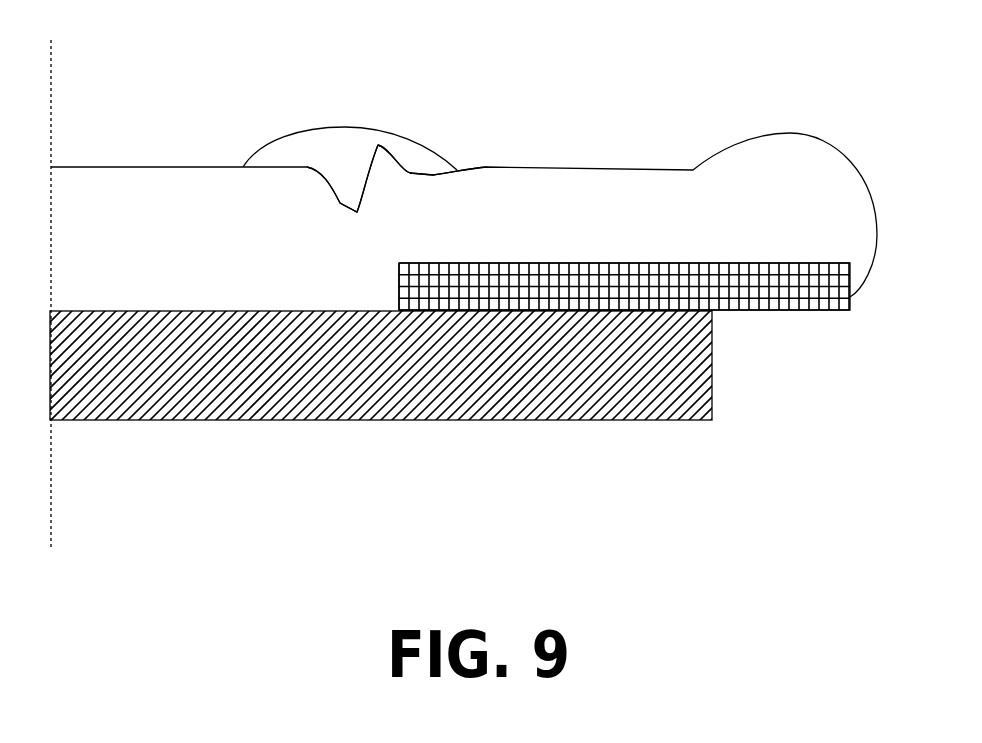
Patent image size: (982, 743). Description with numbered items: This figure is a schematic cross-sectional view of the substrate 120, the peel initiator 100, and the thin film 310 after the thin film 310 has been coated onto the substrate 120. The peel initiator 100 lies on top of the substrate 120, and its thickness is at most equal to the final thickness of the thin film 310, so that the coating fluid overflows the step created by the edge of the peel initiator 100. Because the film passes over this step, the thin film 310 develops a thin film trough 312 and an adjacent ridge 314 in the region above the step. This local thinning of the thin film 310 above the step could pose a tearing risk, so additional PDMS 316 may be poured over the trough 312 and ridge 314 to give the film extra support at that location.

The peel initiator 100 is at (780, 312).
The substrate 120 is at (468, 422).
The thin film 310 is at (483, 170).
The thin film trough 312 is at (358, 212).
The ridge 314 is at (378, 145).
The additional PDMS 316 is at (300, 130).